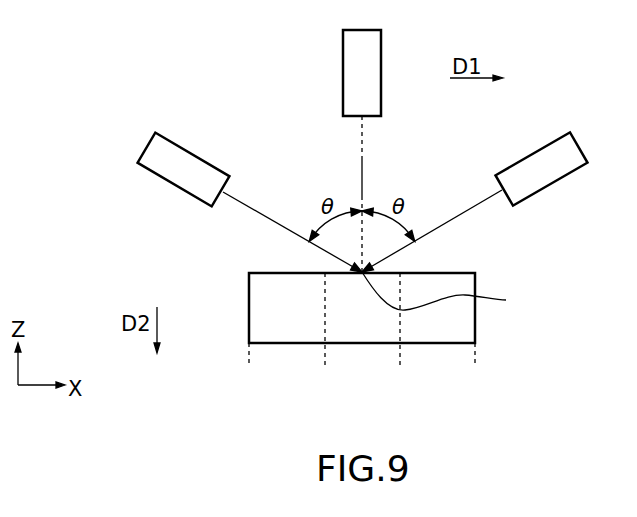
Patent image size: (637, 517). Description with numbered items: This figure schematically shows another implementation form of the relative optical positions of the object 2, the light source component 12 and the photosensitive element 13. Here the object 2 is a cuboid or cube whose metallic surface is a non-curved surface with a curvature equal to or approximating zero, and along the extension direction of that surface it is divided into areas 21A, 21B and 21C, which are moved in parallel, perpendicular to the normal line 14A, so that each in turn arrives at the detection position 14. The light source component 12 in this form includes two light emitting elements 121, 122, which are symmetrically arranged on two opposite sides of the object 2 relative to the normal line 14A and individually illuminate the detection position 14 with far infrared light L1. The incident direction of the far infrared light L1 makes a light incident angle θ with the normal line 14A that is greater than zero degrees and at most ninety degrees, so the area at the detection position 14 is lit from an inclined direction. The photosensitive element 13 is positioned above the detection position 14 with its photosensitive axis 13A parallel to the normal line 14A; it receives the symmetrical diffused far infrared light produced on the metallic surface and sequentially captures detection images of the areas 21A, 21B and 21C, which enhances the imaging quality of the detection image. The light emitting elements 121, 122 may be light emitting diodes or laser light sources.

The object 2 is at (462, 329).
The light source component 12 is at (98, 12).
The photosensitive element 13 is at (383, 72).
The photosensitive axis 13A is at (367, 136).
The detection position 14 is at (449, 293).
The normal line 14A is at (367, 172).
The light emitting element 121 is at (186, 150).
The light emitting element 122 is at (538, 150).
The far infrared light L1 is at (238, 199).
The area 21A is at (325, 367).
The area 21B is at (400, 367).
The area 21C is at (475, 367).